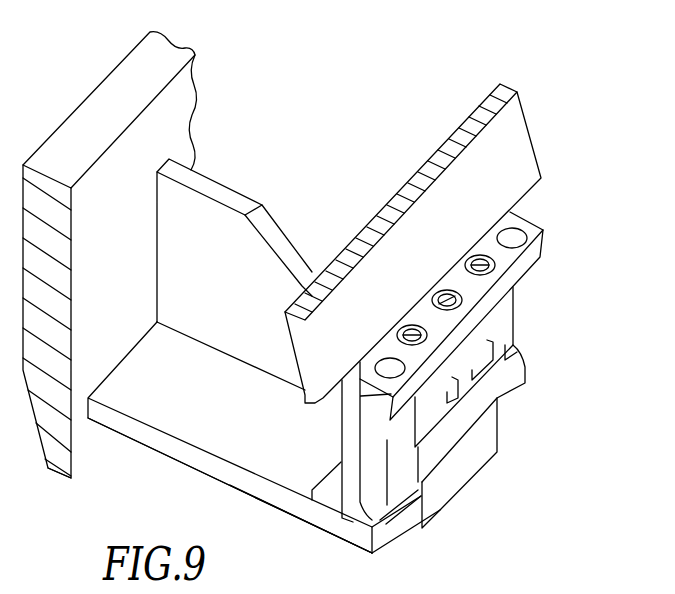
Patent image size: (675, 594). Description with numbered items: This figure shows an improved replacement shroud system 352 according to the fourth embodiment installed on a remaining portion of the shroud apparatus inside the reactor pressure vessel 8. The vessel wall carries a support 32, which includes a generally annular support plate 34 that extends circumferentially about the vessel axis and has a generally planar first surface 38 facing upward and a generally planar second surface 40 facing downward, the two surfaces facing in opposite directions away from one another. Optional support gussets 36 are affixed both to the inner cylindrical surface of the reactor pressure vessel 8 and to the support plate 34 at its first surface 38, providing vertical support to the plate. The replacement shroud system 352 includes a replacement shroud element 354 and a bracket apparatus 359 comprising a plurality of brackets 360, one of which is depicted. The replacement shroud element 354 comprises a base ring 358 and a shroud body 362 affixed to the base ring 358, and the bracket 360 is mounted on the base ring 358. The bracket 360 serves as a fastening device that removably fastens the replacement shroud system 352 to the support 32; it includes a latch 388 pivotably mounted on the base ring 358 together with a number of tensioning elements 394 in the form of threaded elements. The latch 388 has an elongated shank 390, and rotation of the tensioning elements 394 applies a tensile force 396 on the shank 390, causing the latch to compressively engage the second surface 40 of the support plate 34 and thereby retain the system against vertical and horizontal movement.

The reactor pressure vessel 8 is at (178, 96).
The support 32 is at (148, 447).
The support plate 34 is at (305, 524).
The support gussets 36 is at (207, 188).
The first surface 38 is at (128, 372).
The second surface 40 is at (207, 478).
The replacement shroud system 352 is at (456, 303).
The replacement shroud element 354 is at (535, 190).
The base ring 358 is at (340, 433).
The bracket apparatus 359 is at (497, 316).
The bracket 360 is at (515, 324).
The shroud body 362 is at (517, 98).
The latch 388 is at (496, 452).
The elongated shank 390 is at (485, 433).
The tensioning elements 394 is at (412, 325).
The tensile force 396 is at (403, 495).